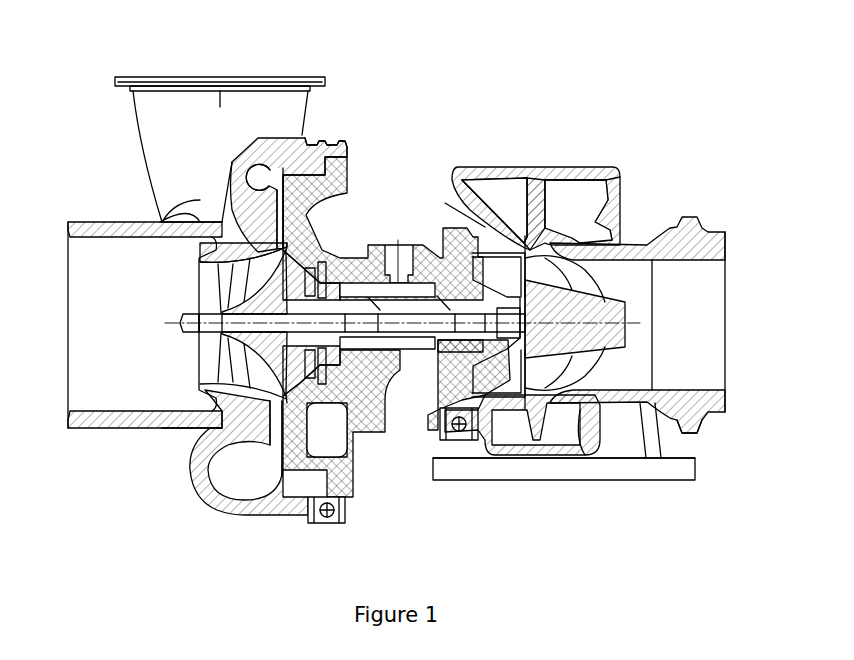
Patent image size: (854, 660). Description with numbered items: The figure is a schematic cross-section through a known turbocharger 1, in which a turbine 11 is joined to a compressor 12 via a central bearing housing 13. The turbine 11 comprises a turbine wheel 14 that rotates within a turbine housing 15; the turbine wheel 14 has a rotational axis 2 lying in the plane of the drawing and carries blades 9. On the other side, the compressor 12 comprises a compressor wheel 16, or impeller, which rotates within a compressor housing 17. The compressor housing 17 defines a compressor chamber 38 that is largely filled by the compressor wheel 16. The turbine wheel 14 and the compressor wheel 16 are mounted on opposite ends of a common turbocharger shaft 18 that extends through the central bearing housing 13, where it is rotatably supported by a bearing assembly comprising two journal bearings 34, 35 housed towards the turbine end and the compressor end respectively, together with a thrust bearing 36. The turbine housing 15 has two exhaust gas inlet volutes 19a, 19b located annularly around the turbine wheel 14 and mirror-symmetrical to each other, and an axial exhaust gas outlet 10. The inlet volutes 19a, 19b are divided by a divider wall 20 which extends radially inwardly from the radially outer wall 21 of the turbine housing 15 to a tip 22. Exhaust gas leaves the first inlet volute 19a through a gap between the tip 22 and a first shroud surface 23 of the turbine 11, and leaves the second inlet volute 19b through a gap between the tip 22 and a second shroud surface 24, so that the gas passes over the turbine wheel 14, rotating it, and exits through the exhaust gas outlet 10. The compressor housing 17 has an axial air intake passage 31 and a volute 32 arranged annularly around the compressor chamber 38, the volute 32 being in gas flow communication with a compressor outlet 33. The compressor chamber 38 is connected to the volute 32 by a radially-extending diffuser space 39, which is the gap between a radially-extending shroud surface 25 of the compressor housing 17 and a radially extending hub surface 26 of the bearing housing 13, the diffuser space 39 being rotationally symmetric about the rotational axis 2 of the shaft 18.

The turbocharger 1 is at (633, 63).
The rotational axis 2 is at (165, 325).
The blades 9 is at (600, 285).
The axial exhaust gas outlet 10 is at (643, 278).
The turbine 11 is at (585, 140).
The compressor 12 is at (110, 455).
The central bearing housing 13 is at (380, 220).
The turbine wheel 14 is at (548, 333).
The turbine housing 15 is at (688, 430).
The compressor wheel 16 is at (233, 307).
The compressor housing 17 is at (200, 220).
The turbocharger shaft 18 is at (438, 342).
The exhaust gas inlet volute 19a is at (598, 185).
The exhaust gas inlet volute 19b is at (497, 170).
The divider wall 20 is at (517, 167).
The radially outer wall 21 is at (560, 167).
The tip 22 is at (528, 238).
The first shroud surface 23 is at (600, 231).
The second shroud surface 24 is at (490, 183).
The shroud surface 25 is at (230, 213).
The hub surface 26 is at (305, 135).
The axial air intake passage 31 is at (97, 262).
The volute 32 is at (258, 175).
The compressor outlet 33 is at (143, 77).
The journal bearing 34 is at (476, 353).
The journal bearing 35 is at (363, 362).
The thrust bearing 36 is at (322, 225).
The compressor chamber 38 is at (233, 220).
The diffuser space 39 is at (279, 203).